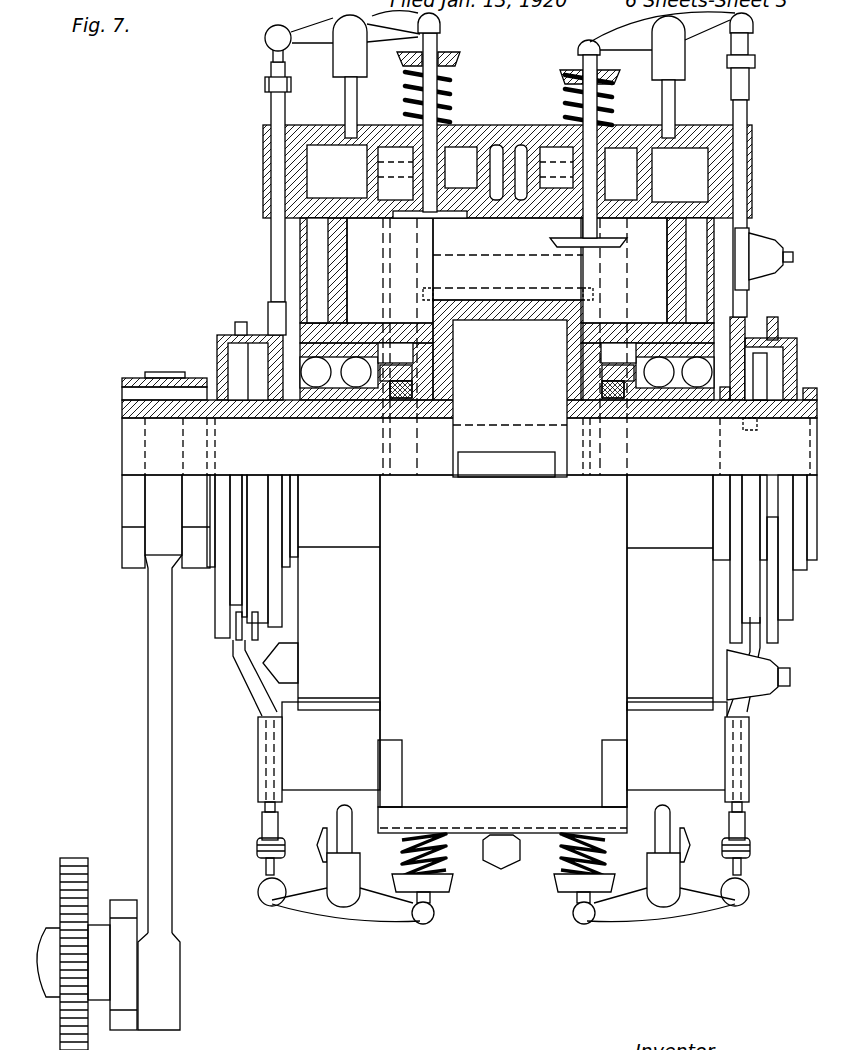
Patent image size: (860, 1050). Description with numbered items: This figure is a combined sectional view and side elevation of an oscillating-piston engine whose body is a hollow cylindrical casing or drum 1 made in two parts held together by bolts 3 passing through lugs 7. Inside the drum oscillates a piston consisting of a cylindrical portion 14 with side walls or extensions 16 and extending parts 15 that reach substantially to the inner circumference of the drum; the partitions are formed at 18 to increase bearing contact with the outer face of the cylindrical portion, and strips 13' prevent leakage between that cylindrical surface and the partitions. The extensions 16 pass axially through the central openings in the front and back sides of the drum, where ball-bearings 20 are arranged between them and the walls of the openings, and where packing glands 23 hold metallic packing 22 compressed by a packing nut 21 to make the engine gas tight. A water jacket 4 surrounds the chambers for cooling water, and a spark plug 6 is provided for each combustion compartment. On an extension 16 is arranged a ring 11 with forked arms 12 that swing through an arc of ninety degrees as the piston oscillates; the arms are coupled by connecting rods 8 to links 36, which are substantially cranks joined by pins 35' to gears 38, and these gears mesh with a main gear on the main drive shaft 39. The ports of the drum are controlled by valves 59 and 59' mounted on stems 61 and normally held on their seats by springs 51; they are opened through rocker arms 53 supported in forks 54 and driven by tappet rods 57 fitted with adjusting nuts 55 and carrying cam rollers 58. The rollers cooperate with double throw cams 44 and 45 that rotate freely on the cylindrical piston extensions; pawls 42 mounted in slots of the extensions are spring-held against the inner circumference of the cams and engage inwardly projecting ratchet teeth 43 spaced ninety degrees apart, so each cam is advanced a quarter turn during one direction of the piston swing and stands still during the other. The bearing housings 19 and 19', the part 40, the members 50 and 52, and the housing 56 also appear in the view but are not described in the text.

The casing or drum 1 is at (425, 243).
The bolts 3 is at (504, 856).
The water jacket 4 is at (300, 274).
The spark plug 6 is at (762, 246).
The lugs 7 is at (490, 855).
The connecting rods 8 is at (160, 531).
The ring 11 is at (125, 379).
The forked arms 12 is at (135, 500).
The strips 13' is at (508, 278).
The cylindrical portion 14 is at (492, 317).
The extending parts 15 is at (498, 443).
The side walls or extensions 16 is at (122, 406).
The partition formation 18 is at (568, 284).
The ball bearing 19 is at (366, 347).
The ball bearing 19' is at (647, 349).
The ball-bearings 20 is at (298, 419).
The packing nut 21 is at (380, 400).
The metallic packing 22 is at (403, 394).
The packing glands 23 is at (415, 394).
The pins 35' is at (186, 981).
The links 36 is at (120, 906).
The gears 38 is at (78, 858).
The shaft 39 is at (58, 998).
The spring 40 is at (480, 828).
The pawls 42 is at (757, 428).
The ratchet teeth 43 is at (782, 370).
The double throw cam 44 is at (778, 342).
The double throw cam 45 is at (233, 328).
The cylinder head 50 is at (470, 126).
The springs 51 is at (452, 80).
The spring retainer 52 is at (457, 56).
The rocker arms 53 is at (440, 25).
The forks 54 is at (345, 20).
The adjusting nuts 55 is at (265, 83).
The housing 56 is at (262, 160).
The tappet rods 57 is at (271, 240).
The cam rollers 58 is at (268, 316).
The valve 59 is at (433, 227).
The valve 59' is at (572, 236).
The stems 61 is at (412, 100).